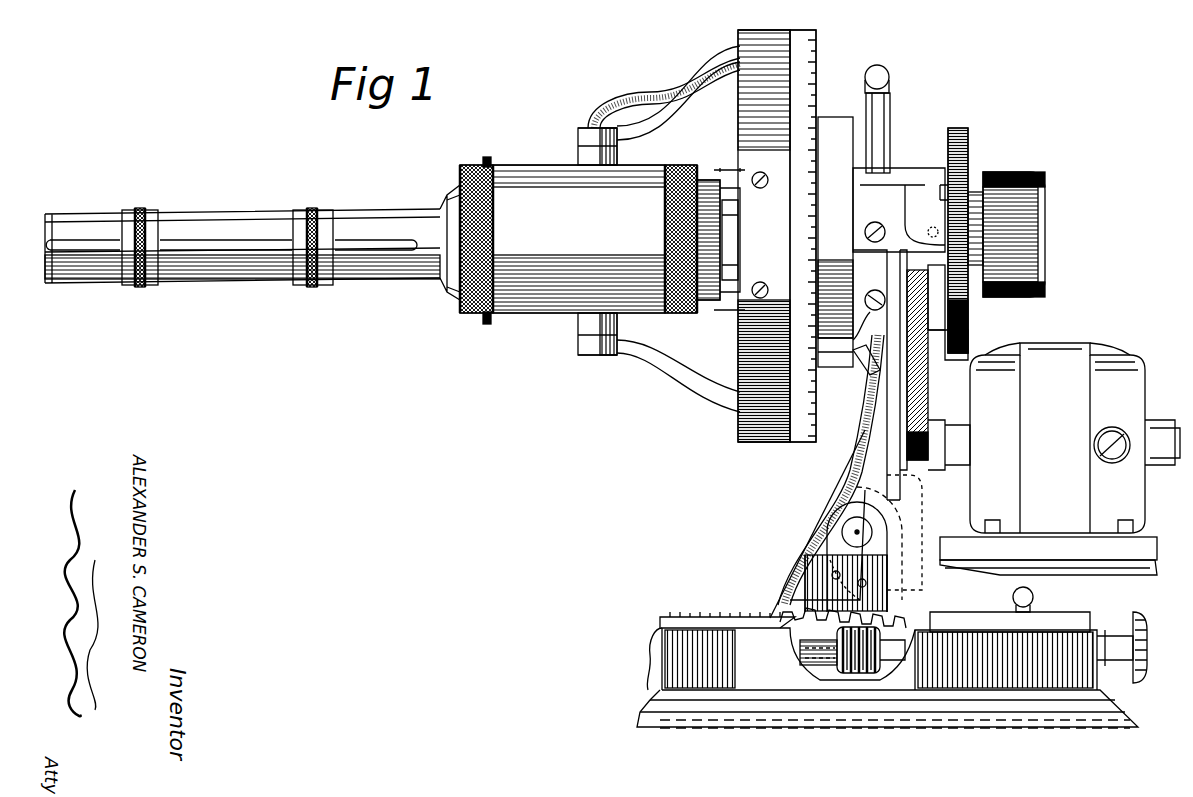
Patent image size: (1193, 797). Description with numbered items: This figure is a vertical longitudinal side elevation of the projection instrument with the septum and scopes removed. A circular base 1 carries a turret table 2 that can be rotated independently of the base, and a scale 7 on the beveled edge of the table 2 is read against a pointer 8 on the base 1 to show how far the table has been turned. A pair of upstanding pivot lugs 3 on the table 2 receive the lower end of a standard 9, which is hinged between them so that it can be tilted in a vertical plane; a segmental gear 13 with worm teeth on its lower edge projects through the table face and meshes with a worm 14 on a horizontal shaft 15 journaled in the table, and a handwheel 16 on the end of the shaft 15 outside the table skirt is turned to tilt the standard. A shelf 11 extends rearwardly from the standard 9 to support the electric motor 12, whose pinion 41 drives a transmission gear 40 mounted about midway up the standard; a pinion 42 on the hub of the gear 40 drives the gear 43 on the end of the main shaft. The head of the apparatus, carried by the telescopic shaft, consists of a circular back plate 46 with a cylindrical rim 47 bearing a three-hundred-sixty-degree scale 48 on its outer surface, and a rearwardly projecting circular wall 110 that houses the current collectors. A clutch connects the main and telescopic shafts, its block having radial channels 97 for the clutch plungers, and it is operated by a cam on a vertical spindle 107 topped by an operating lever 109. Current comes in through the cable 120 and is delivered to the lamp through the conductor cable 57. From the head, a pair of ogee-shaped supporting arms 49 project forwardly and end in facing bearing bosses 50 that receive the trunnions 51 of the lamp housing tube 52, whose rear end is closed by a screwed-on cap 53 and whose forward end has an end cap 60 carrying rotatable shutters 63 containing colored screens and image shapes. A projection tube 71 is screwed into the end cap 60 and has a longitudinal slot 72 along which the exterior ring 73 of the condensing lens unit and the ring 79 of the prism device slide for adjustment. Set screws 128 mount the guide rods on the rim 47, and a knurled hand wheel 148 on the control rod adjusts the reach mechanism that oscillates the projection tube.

The circular base 1 is at (704, 722).
The table 2 is at (731, 682).
The pivot lugs 3 is at (808, 600).
The scale 7 is at (677, 618).
The pointer 8 is at (656, 636).
The standard 9 is at (874, 543).
The shelf 11 is at (1078, 562).
The electric motor 12 is at (1125, 372).
The segmental gear 13 is at (806, 592).
The worm 14 is at (858, 675).
The horizontal shaft 15 is at (892, 662).
The handwheel 16 is at (1140, 672).
The transmission gear 40 is at (929, 404).
The pinion 41 is at (916, 462).
The pinion 42 is at (968, 364).
The gear 43 is at (970, 318).
The back plate 46 is at (820, 430).
The cylindrical flange or rim 47 is at (765, 444).
The 360° scale 48 is at (806, 444).
The supporting arms 49 is at (698, 80).
The bearing bosses 50 is at (579, 133).
The trunnions 51 is at (586, 152).
The tube 52 is at (618, 332).
The cap 53 is at (672, 314).
The conductors 57 is at (652, 98).
The end cap 60 is at (447, 294).
The shutters or screens 63 is at (487, 158).
The projection tube 71 is at (176, 213).
The longitudinal slot 72 is at (210, 240).
The exterior ring 73 is at (140, 288).
The ring 79 is at (312, 288).
The radial channels 97 is at (945, 190).
The vertical spindle 107 is at (890, 115).
The operating handle or lever 109 is at (879, 76).
The circular wall or flange 110 is at (836, 125).
The cable 120 is at (830, 470).
The set screws 128 is at (760, 172).
The knurled hand wheel 148 is at (1008, 173).